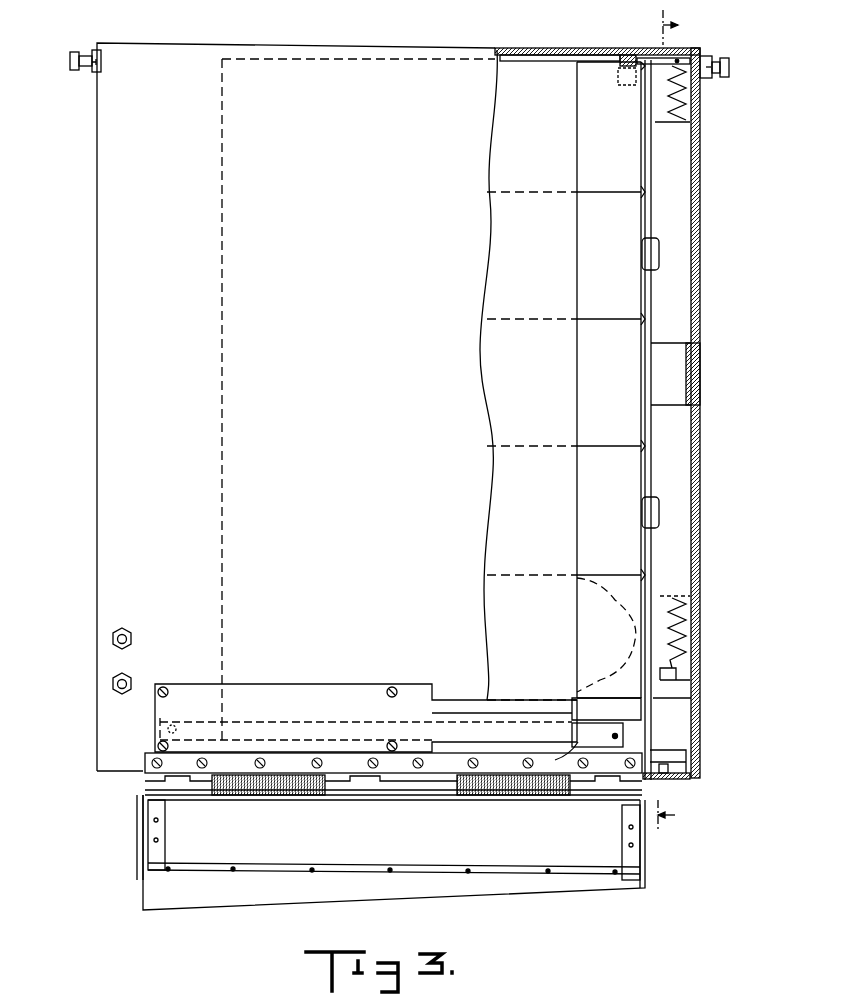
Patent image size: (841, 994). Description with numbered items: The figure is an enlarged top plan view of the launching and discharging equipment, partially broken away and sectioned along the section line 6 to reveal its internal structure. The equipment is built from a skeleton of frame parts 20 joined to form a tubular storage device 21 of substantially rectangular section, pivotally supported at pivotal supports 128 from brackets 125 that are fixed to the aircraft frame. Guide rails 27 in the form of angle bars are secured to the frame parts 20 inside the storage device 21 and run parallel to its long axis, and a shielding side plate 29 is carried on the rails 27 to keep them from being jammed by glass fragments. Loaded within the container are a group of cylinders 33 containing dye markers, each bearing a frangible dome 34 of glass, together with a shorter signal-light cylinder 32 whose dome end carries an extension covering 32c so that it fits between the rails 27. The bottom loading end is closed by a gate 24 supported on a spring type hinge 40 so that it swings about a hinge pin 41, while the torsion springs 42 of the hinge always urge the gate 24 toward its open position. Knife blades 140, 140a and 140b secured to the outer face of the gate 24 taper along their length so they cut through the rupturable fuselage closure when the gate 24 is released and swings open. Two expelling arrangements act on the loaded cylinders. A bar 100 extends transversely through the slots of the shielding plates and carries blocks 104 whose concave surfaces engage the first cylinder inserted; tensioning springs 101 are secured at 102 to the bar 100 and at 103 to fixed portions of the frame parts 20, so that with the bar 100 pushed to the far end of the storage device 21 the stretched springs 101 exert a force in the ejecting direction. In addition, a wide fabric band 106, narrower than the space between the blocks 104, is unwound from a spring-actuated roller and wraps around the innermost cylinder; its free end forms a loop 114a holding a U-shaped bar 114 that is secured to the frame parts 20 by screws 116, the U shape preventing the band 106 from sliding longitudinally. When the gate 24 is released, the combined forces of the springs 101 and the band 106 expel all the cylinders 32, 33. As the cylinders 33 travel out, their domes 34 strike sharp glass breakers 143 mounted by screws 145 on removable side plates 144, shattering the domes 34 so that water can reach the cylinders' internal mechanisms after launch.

The section line 6 is at (676, 422).
The frame parts 20 is at (690, 770).
The storage device 21 is at (113, 578).
The gate 24 is at (180, 834).
The guide rails 27 is at (646, 220).
The right hand shielding side plate 29 is at (652, 173).
The cylinder 32 is at (635, 595).
The extension covering 32c is at (692, 598).
The cylinders 33 is at (632, 140).
The domes 34 is at (652, 254).
The spring type hinge 40 is at (178, 768).
The hinge pin 41 is at (325, 772).
The torsion springs 42 is at (272, 794).
The bar 100 is at (592, 52).
The tensioning springs 101 is at (690, 104).
The attachment point to rod 102 is at (665, 58).
The attachment point to frame 103 is at (680, 670).
The blocks 104 is at (629, 52).
The band 106 is at (222, 143).
The U-shaped bar 114 is at (566, 765).
The loop 114a is at (490, 736).
The screws 116 is at (618, 736).
The brackets 125 is at (95, 72).
The pivotal supports 128 is at (88, 52).
The knife blade 140 is at (248, 896).
The knife blade 140a is at (140, 872).
The knife blade 140b is at (645, 862).
The glass breaker 143 is at (662, 766).
The side plates 144 is at (682, 796).
The screws 145 is at (670, 781).